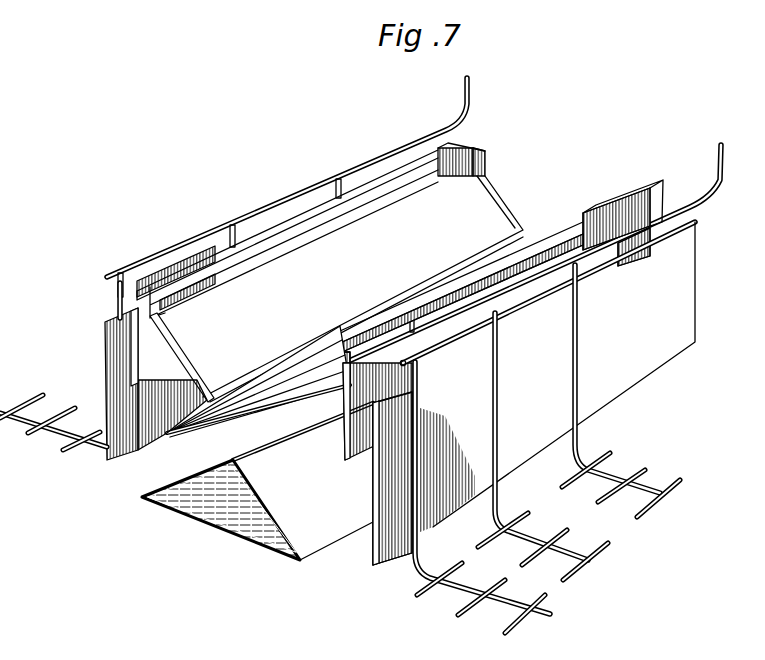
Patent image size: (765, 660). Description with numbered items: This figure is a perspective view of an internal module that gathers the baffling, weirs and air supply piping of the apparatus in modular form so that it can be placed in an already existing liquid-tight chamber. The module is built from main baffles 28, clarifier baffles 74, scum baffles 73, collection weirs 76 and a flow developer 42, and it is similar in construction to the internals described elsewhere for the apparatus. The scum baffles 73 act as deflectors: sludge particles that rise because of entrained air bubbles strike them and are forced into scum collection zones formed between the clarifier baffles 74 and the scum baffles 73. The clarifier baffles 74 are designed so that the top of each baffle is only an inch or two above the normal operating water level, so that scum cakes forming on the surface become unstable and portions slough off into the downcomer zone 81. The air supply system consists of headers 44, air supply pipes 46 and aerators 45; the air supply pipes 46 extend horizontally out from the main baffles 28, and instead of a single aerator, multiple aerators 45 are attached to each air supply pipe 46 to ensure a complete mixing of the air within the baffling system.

The downcomer zone 81 is at (376, 140).
The header 44 is at (253, 213).
The air supply pipe 46 is at (115, 292).
The main baffle 28 is at (104, 350).
The aerator 45 is at (47, 413).
The collection weir 76 is at (297, 357).
The clarifier baffle 74 is at (142, 367).
The scum baffle 73 is at (200, 428).
The flow developer 42 is at (150, 483).